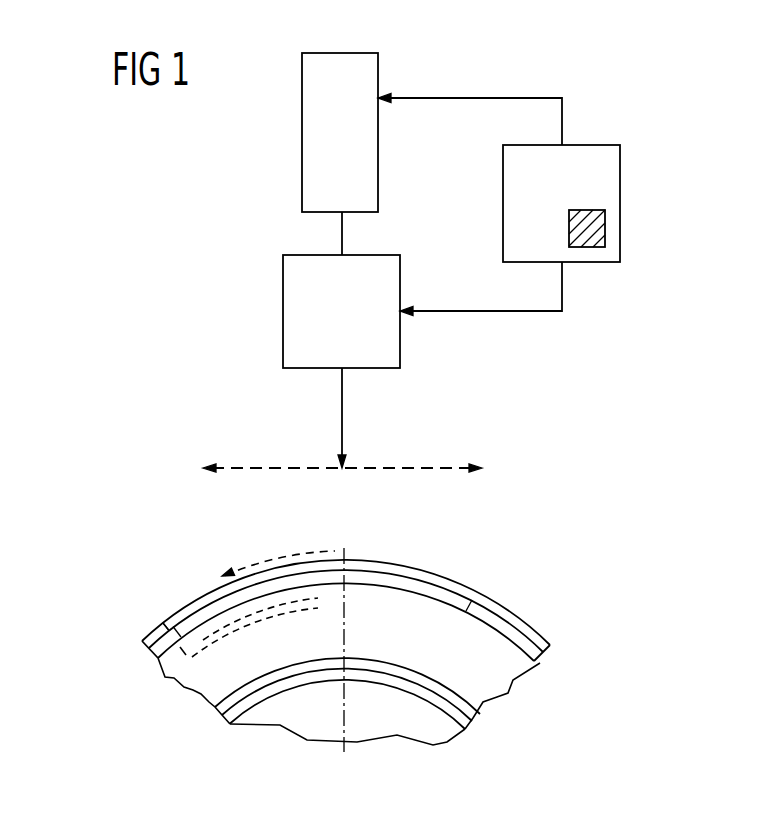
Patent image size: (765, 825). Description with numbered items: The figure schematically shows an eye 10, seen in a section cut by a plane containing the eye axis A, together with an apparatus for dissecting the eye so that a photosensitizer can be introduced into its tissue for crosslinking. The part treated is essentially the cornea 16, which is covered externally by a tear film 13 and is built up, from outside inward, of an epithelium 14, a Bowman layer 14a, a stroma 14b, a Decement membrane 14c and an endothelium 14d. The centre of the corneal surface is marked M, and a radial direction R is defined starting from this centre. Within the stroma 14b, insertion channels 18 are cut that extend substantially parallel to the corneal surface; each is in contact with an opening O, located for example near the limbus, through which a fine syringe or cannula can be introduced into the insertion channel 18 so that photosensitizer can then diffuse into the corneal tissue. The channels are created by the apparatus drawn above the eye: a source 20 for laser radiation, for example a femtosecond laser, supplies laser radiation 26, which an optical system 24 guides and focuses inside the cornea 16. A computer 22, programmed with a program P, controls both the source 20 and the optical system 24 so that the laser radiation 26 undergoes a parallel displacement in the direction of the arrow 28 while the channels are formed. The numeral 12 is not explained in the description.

The eye 10 is at (533, 622).
The coating layer 12 is at (158, 558).
The tear film 13 is at (408, 568).
The epithelium 14 is at (448, 592).
The Bowman layer 14a is at (476, 607).
The stroma 14b is at (515, 679).
The Decement membrane 14c is at (479, 714).
The endothelium 14d is at (470, 728).
The cornea 16 is at (215, 580).
The insertion channels 18 is at (258, 623).
The source for laser radiation 20 is at (302, 137).
The computer 22 is at (503, 206).
The optical system 24 is at (283, 312).
The laser radiation 26 is at (342, 404).
The arrow 28 is at (410, 467).
The eye axis A is at (347, 703).
The centre of the surface of the cornea M is at (345, 557).
The openings O is at (166, 624).
The program P is at (569, 229).
The radial direction R is at (282, 557).